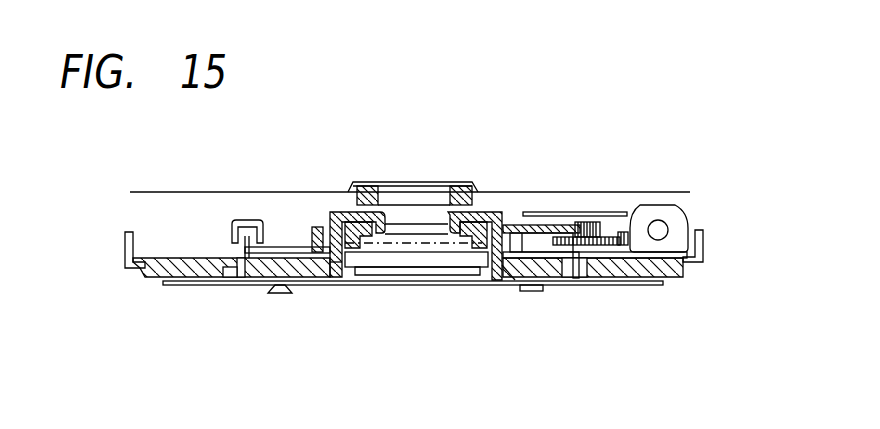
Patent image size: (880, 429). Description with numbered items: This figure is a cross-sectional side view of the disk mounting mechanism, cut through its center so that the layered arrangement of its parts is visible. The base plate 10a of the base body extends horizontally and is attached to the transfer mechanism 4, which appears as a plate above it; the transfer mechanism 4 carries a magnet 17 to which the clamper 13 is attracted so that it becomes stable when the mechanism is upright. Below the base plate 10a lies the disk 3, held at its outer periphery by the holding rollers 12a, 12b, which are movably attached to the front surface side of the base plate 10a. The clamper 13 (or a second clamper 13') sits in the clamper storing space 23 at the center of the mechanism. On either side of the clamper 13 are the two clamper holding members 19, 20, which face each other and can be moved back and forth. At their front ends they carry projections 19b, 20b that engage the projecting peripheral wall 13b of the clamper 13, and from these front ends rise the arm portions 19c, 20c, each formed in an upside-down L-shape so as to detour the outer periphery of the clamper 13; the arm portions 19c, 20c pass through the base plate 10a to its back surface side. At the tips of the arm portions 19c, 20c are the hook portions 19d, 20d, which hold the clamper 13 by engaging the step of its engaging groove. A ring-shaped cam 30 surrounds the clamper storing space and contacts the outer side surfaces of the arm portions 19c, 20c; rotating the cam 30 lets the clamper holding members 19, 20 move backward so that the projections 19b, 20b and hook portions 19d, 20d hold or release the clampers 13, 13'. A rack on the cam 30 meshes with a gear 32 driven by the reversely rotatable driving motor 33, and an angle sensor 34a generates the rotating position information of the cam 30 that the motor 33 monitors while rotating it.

The transfer mechanism 4 is at (222, 192).
The base plate 10a is at (165, 257).
The clamper holding member 20 is at (135, 268).
The angle sensor 34a is at (265, 220).
The magnet 17 is at (460, 192).
The clamper storing space 23 is at (408, 216).
The arm portion 20c is at (333, 214).
The hook portion 20d is at (366, 249).
The arm portion 19c is at (500, 216).
The hook portion 19d is at (478, 249).
The clamper 13' is at (413, 297).
The clamper 13 is at (416, 296).
The projecting peripheral wall 13b is at (445, 277).
The projection 20b is at (342, 278).
The projection 19b is at (497, 280).
The ring-shaped cam 30 is at (535, 215).
The gear 32 is at (607, 221).
The driving motor 33 is at (656, 208).
The clamper holding member 19 is at (690, 268).
The disk 3 is at (661, 287).
The holding roller 12a is at (540, 291).
The holding roller 12b is at (287, 293).